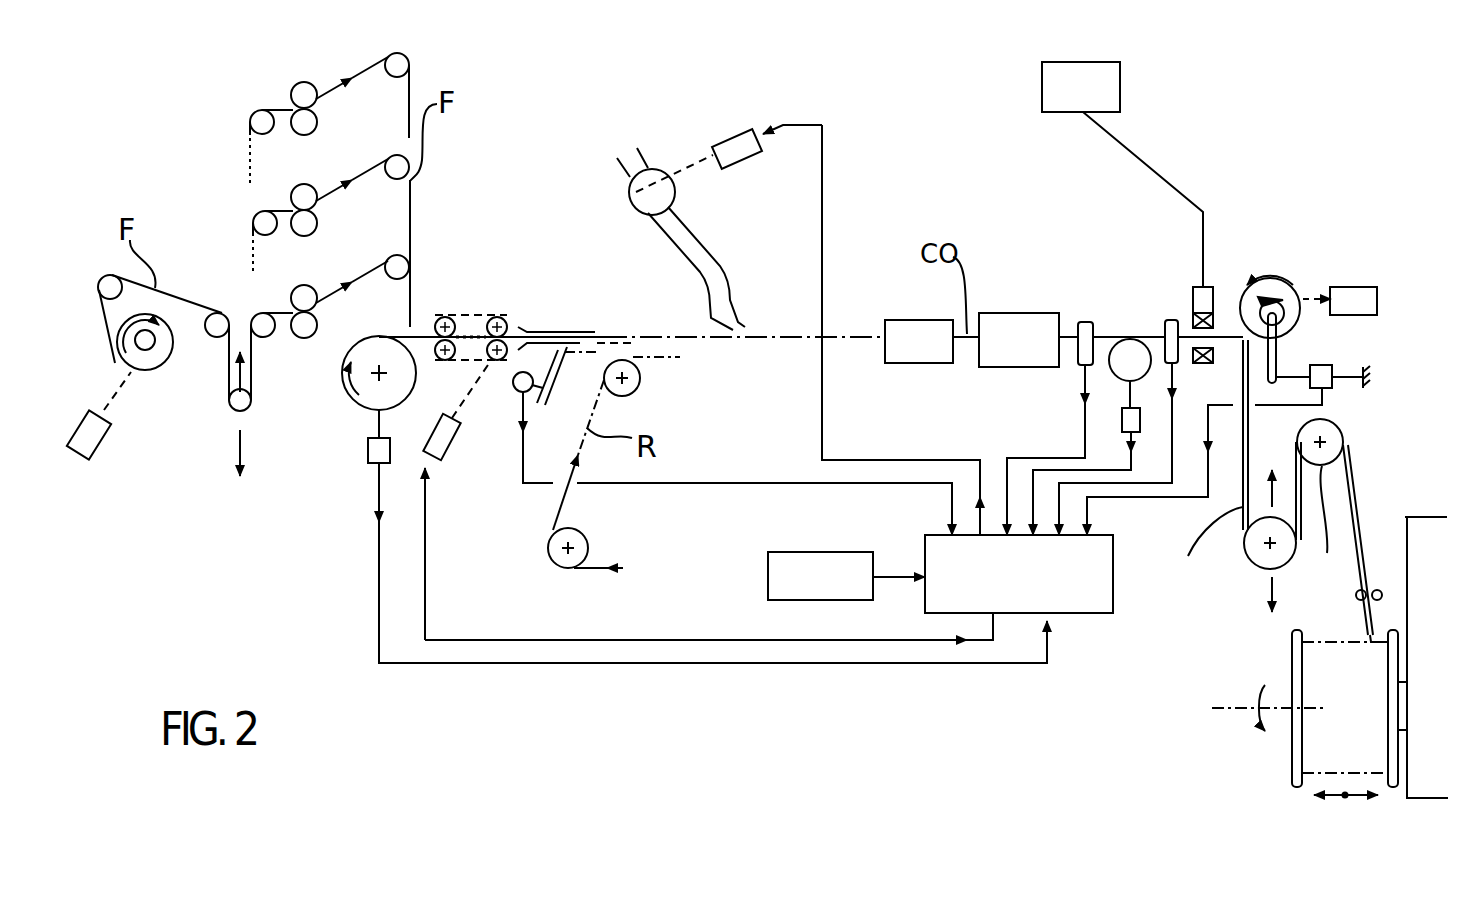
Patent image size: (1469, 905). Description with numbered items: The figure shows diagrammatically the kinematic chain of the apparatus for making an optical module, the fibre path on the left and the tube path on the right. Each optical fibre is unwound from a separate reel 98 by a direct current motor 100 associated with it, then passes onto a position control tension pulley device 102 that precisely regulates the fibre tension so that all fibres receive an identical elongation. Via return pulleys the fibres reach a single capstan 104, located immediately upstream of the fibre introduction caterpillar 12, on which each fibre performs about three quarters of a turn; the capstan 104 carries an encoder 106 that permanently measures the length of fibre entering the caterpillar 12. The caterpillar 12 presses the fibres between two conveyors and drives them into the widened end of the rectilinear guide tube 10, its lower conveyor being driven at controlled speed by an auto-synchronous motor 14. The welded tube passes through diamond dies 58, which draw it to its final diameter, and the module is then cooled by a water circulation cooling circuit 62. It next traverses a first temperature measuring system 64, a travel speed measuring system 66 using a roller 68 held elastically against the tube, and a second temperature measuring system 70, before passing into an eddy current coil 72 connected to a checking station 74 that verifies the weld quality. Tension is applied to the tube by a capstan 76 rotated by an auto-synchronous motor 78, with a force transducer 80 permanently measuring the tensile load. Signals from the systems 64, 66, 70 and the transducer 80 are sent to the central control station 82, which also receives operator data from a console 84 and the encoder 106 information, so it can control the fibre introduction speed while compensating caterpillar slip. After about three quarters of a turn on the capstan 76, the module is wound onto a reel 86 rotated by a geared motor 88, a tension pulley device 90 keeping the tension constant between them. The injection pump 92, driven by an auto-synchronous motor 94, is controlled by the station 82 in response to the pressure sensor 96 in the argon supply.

The guide tube 10 is at (543, 327).
The fibre introduction caterpillar 12 is at (467, 313).
The auto-synchronous motor 14 is at (440, 447).
The diamond dies 58 is at (897, 330).
The water circulation cooling circuit 62 is at (1000, 360).
The first temperature measuring system 64 is at (1087, 325).
The tube travel speed measuring system 66 is at (1123, 418).
The roller 68 is at (1125, 358).
The second temperature measuring system 70 is at (1170, 322).
The eddy current coil 72 is at (1216, 316).
The checking station 74 is at (1112, 90).
The capstan 76 is at (1300, 303).
The auto-synchronous motor 78 is at (1377, 289).
The force transducer 80 is at (1322, 366).
The central control station 82 is at (1088, 595).
The console 84 is at (766, 577).
The reel 86 is at (1310, 740).
The geared motor 88 is at (1427, 517).
The guide roller 90 is at (1290, 541).
The injection pump 92 is at (630, 203).
The auto-synchronous motor 94 is at (731, 146).
The pressure sensor 96 is at (518, 386).
The reel 98 is at (173, 345).
The direct current motor 100 is at (88, 456).
The position control tension pulley device 102 is at (229, 411).
The capstan 104 is at (351, 366).
The encoder 106 is at (368, 457).